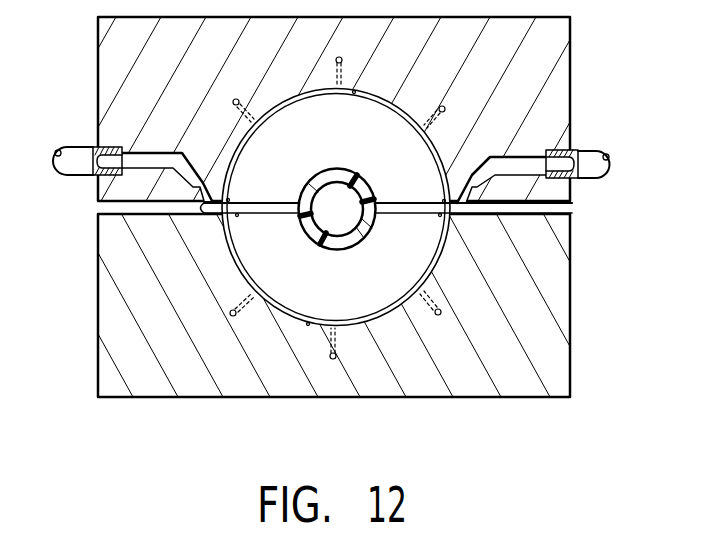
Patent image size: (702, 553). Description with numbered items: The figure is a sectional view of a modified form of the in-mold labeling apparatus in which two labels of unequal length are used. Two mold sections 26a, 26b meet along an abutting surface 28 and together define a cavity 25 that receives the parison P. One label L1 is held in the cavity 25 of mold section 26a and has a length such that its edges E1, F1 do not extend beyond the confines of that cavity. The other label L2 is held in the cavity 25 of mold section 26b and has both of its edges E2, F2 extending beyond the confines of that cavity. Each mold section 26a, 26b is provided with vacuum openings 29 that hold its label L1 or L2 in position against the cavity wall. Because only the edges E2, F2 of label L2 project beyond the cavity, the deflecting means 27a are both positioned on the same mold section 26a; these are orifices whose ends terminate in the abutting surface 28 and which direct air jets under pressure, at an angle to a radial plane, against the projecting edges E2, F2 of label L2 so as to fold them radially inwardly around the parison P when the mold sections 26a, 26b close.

The mold section 26a is at (98, 125).
The mold section 26b is at (98, 333).
The cavity 25 is at (380, 91).
The deflecting means 27a is at (462, 196).
The abutting surface 28 is at (537, 207).
The vacuum openings 29 is at (336, 60).
The parison P is at (351, 170).
The label L1 is at (354, 93).
The label L2 is at (308, 324).
The edge of label E1 is at (444, 201).
The edge of label E2 is at (237, 215).
The edge of label F1 is at (228, 200).
The edge of label F2 is at (440, 215).